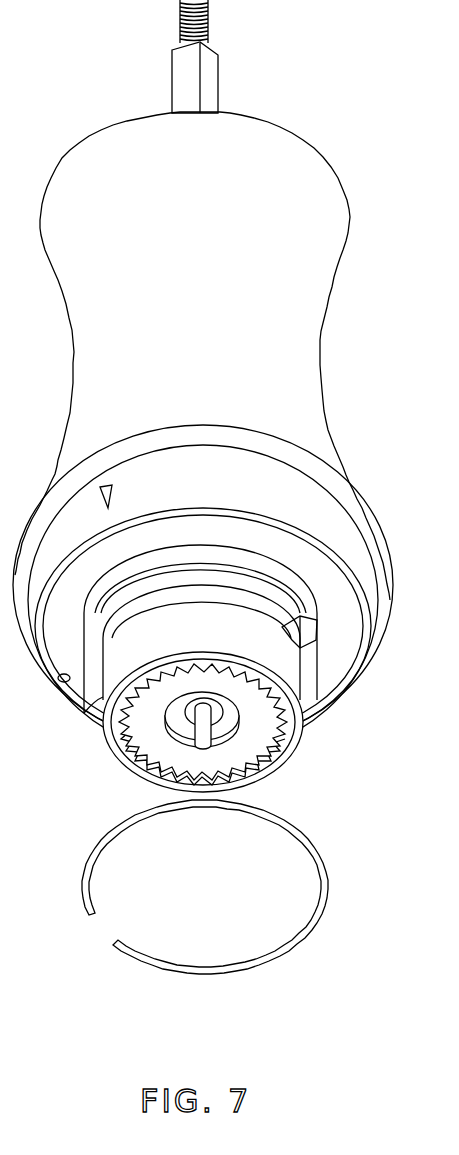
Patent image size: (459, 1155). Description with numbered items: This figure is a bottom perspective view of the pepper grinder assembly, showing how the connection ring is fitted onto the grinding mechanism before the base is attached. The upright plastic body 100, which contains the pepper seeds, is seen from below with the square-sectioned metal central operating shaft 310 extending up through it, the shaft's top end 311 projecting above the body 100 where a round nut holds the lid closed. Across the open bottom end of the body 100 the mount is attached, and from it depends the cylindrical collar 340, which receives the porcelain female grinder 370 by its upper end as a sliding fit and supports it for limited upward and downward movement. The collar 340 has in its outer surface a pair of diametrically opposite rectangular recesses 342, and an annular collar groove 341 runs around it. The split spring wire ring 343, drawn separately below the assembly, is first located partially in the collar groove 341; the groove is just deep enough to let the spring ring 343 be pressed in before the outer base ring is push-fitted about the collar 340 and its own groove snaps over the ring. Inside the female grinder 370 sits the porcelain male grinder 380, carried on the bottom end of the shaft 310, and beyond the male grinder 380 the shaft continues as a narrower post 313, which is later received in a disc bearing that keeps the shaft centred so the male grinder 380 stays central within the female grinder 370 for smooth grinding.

The body 100 is at (327, 225).
The central operating shaft 310 is at (212, 82).
The top end 311 is at (208, 20).
The post 313 is at (210, 743).
The collar 340 is at (235, 595).
The collar groove 341 is at (252, 565).
The rectangular recesses 342 is at (300, 622).
The split spring wire ring 343 is at (305, 933).
The female grinder 370 is at (257, 738).
The male grinder 380 is at (123, 762).